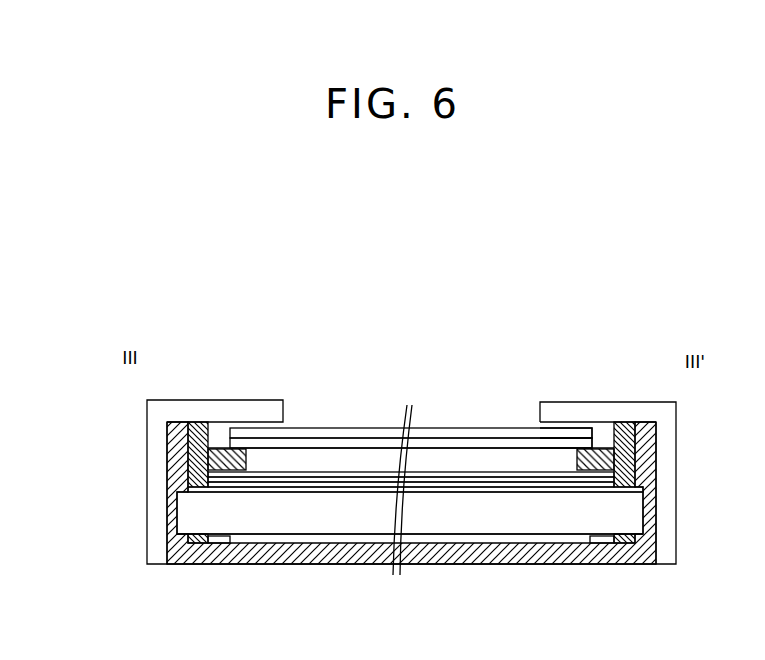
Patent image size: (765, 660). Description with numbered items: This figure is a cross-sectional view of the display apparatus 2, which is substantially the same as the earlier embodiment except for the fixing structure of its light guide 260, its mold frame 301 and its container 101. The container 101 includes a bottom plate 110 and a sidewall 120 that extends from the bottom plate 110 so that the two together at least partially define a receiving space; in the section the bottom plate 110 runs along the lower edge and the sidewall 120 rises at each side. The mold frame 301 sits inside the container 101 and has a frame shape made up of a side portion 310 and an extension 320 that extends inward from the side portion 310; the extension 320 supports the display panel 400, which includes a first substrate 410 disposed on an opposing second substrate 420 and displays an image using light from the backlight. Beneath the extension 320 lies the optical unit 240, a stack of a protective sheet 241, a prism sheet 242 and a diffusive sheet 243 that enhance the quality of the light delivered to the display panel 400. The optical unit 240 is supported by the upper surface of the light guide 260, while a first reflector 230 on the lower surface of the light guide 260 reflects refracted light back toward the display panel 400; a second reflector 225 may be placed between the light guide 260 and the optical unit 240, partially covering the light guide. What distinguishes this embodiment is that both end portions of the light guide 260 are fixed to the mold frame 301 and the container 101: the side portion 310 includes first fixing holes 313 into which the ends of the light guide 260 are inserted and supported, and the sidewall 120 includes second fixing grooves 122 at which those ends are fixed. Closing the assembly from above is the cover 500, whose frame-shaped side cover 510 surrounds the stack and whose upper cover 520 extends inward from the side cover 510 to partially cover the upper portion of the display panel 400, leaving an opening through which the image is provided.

The display apparatus 2 is at (363, 295).
The container 101 is at (68, 460).
The bottom plate 110 is at (203, 553).
The sidewall 120 is at (190, 466).
The second fixing groove 122 is at (177, 504).
The second reflector 225 is at (643, 489).
The first reflector 230 is at (292, 538).
The optical unit 240 is at (413, 347).
The protective sheet 241 is at (432, 472).
The prism sheet 242 is at (475, 478).
The diffusive sheet 243 is at (520, 485).
The light guide 260 is at (340, 518).
The mold frame 301 is at (307, 341).
The side portion 310 is at (207, 438).
The first fixing hole 313 is at (212, 452).
The extension 320 is at (235, 457).
The display panel 400 is at (640, 347).
The first substrate 410 is at (587, 442).
The second substrate 420 is at (557, 438).
The cover 500 is at (68, 378).
The side cover 510 is at (147, 424).
The upper cover 520 is at (163, 400).